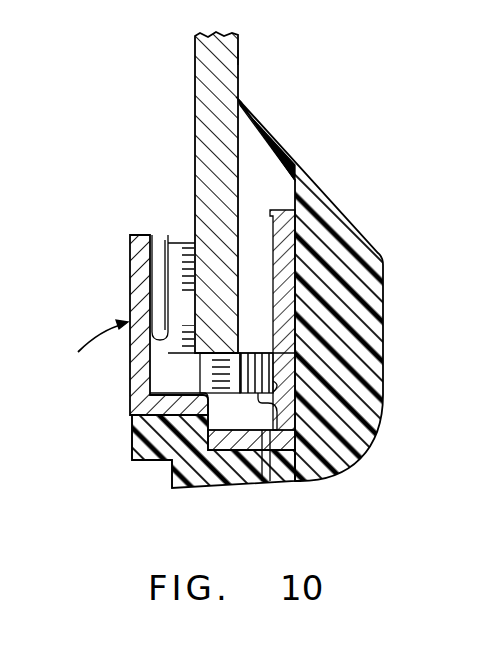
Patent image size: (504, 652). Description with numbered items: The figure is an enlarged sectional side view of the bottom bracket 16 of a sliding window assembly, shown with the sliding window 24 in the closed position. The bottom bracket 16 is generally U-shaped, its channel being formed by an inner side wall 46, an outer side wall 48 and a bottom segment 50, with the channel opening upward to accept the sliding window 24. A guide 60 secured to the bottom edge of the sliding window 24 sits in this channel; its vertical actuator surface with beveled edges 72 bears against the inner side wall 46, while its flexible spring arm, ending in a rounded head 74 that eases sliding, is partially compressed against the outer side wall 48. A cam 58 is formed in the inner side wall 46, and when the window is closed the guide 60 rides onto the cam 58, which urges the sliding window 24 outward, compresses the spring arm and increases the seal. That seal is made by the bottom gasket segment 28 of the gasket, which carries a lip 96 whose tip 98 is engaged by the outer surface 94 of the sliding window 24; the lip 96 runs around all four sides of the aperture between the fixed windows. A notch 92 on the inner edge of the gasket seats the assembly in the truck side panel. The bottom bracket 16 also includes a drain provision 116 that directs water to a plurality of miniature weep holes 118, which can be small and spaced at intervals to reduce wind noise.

The bottom bracket 16 is at (87, 346).
The sliding window 24 is at (212, 120).
The bottom gasket segment 28 is at (372, 405).
The inner side wall 46 is at (138, 275).
The outer side wall 48 is at (285, 245).
The bottom segment 50 is at (210, 452).
The cam 58 is at (160, 242).
The guide 60 is at (232, 372).
The beveled edges 72 is at (183, 247).
The rounded head 74 is at (245, 362).
The notch 92 is at (150, 462).
The outer surface 94 is at (238, 57).
The lip 96 is at (280, 147).
The tip 98 is at (238, 98).
The drain provision 116 is at (238, 420).
The weep holes 118 is at (286, 462).